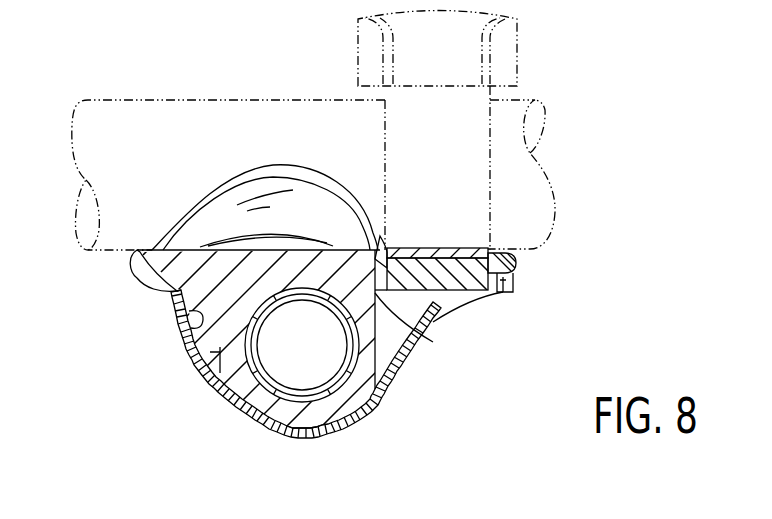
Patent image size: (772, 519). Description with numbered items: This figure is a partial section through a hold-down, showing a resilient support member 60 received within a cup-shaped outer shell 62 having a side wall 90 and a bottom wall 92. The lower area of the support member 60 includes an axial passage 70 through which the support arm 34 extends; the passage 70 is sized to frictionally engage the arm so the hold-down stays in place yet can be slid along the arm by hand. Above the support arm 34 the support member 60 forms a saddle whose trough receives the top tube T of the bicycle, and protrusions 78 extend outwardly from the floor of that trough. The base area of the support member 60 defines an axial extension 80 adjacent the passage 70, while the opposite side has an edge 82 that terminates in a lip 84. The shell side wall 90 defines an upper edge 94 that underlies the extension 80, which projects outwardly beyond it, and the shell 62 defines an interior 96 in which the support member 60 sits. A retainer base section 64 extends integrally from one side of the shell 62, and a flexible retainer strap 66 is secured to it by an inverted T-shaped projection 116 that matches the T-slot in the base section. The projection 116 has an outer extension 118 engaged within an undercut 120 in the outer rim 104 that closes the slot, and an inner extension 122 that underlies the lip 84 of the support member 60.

The top tube T is at (187, 98).
The flexible retainer strap 66 is at (488, 58).
The resilient support member 60 is at (168, 232).
The protrusions 78 is at (273, 228).
The axial extension 80 is at (133, 267).
The upper edge 94 is at (170, 279).
The interior 96 is at (190, 312).
The side wall 90 is at (243, 342).
The support arm 34 is at (186, 327).
The outer shell 62 is at (196, 372).
The bottom wall 92 is at (300, 439).
The edge 82 is at (388, 367).
The axial passage 70 is at (236, 406).
The inner extension 122 is at (433, 342).
The retainer base section 64 is at (473, 325).
The inverted T-shaped projection 116 is at (473, 295).
The outer rim 104 is at (515, 265).
The outer extension 118 is at (506, 278).
The undercut 120 is at (498, 293).
The lip 84 is at (385, 256).